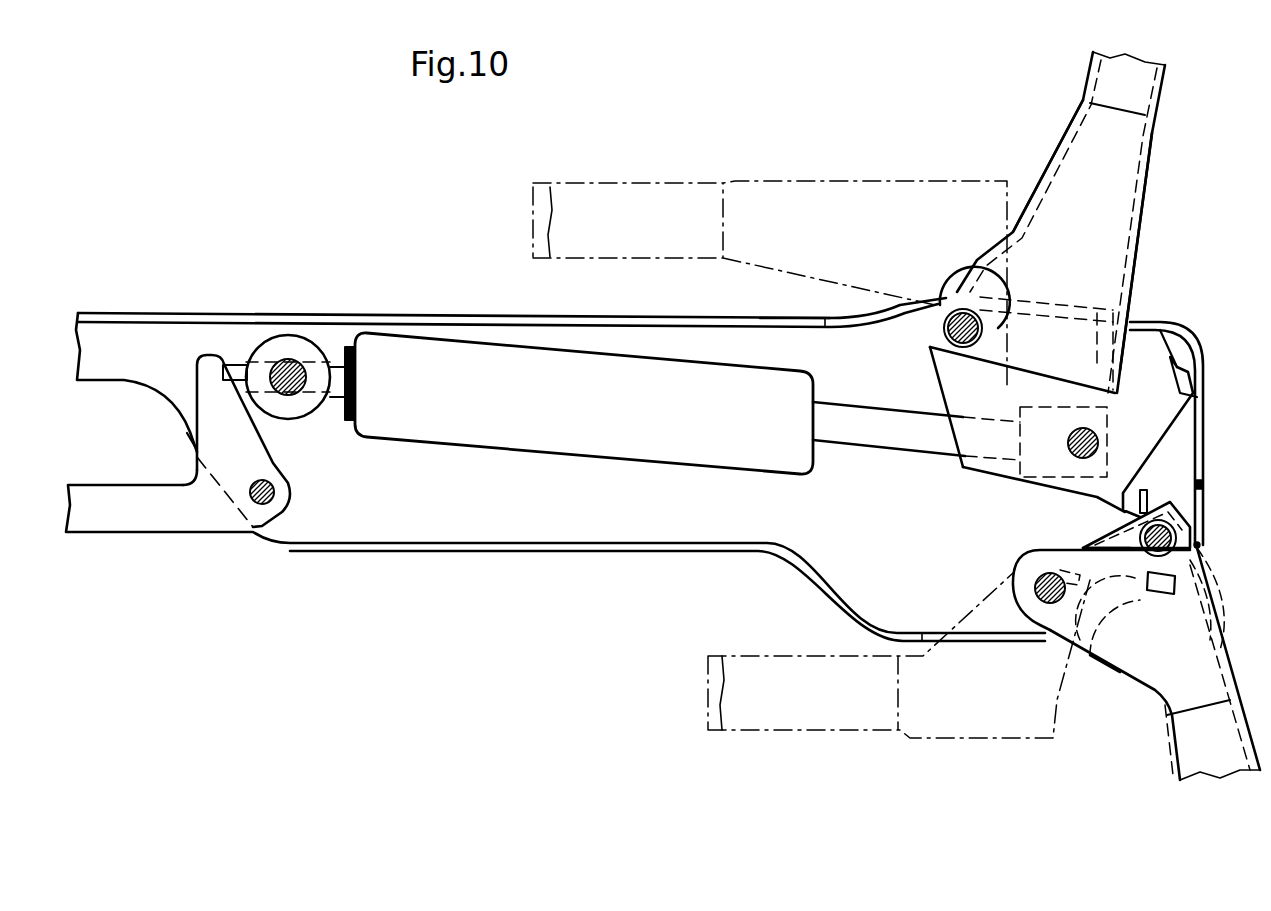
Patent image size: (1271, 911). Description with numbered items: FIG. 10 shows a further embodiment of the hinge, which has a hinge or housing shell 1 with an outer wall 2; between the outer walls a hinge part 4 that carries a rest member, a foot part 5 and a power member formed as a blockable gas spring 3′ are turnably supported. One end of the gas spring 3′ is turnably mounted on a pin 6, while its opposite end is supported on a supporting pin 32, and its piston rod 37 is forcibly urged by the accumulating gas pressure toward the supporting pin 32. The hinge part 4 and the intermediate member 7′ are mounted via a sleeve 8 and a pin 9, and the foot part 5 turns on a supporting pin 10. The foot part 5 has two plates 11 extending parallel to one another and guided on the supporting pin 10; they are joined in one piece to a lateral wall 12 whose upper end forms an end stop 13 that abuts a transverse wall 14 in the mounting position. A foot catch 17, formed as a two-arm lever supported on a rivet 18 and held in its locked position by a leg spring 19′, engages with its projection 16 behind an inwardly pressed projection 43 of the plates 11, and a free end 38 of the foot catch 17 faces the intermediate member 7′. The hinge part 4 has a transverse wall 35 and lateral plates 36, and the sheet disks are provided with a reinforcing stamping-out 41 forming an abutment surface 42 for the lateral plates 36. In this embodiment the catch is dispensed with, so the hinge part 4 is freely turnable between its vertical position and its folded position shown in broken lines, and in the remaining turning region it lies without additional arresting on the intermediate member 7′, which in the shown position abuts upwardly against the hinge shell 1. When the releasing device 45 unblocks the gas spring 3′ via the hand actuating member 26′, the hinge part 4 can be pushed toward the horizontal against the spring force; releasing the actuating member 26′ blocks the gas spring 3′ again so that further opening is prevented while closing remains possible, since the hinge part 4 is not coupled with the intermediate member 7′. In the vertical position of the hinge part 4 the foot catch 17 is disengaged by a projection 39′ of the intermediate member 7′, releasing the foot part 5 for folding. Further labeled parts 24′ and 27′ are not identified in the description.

The hinge shell 1 is at (610, 320).
The outer wall 2 is at (745, 336).
The blockable gas spring 3′ is at (430, 356).
The hinge part 4 is at (1133, 188).
The foot part 5 is at (1184, 689).
The pin 6 is at (288, 360).
The intermediate member 7′ is at (1167, 407).
The sleeve 8 is at (962, 310).
The pin 9 is at (934, 312).
The supporting pin 10 is at (1033, 588).
The plates 11 is at (1125, 657).
The lateral wall 12 is at (1203, 578).
The end stop 13 is at (1199, 544).
The transverse wall 14 is at (1192, 522).
The projection 16 is at (1090, 647).
The foot catch 17 is at (1043, 640).
The rivet 18 is at (1172, 517).
The leg spring 19′ is at (1077, 527).
The pivot pin 24′ is at (276, 496).
The manual actuating member 26′ is at (142, 504).
The piston rod 27′ is at (957, 440).
The supporting pin 32 is at (1083, 458).
The transverse wall 35 is at (1120, 237).
The lateral plates 36 is at (1060, 186).
The piston rod 37 is at (887, 424).
The free end 38 is at (1153, 493).
The projection 39′ is at (1127, 510).
The reinforcing stamping-out 41 is at (945, 385).
The abutment surface 42 is at (1098, 382).
The projection 43 is at (1170, 610).
The releasing device 45 is at (230, 362).